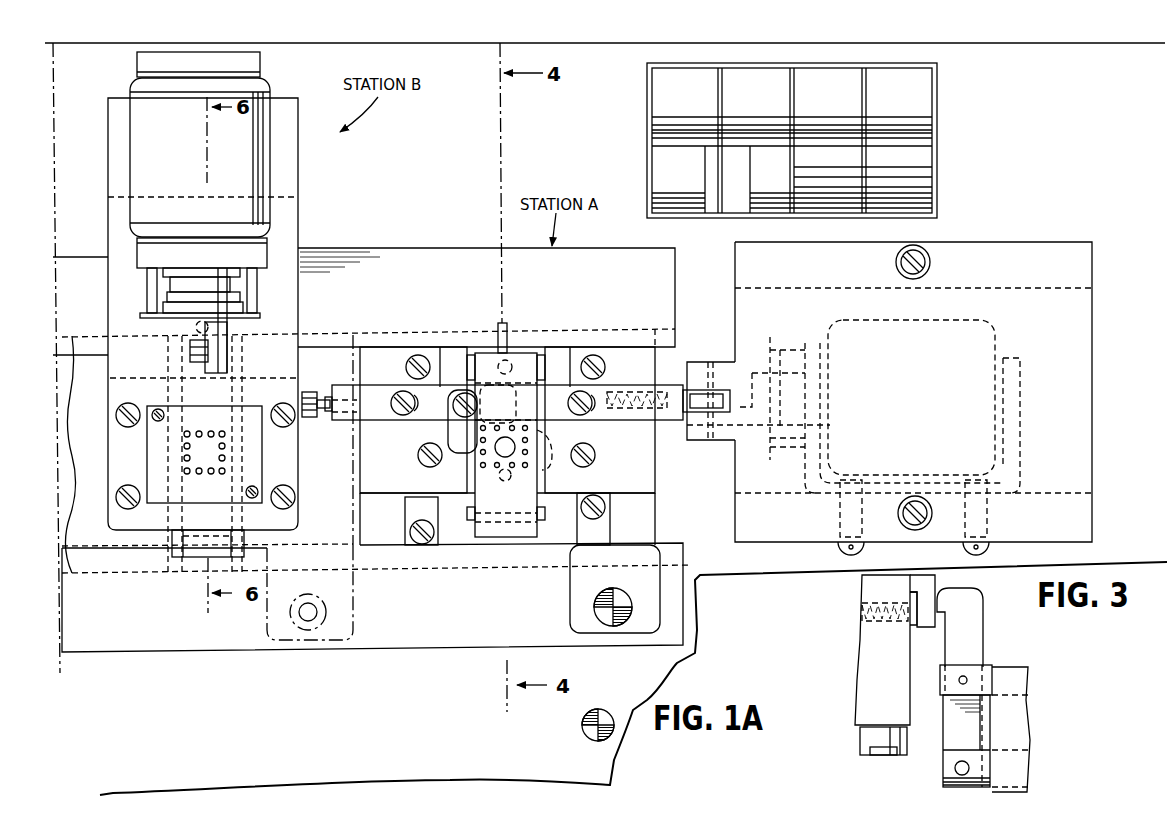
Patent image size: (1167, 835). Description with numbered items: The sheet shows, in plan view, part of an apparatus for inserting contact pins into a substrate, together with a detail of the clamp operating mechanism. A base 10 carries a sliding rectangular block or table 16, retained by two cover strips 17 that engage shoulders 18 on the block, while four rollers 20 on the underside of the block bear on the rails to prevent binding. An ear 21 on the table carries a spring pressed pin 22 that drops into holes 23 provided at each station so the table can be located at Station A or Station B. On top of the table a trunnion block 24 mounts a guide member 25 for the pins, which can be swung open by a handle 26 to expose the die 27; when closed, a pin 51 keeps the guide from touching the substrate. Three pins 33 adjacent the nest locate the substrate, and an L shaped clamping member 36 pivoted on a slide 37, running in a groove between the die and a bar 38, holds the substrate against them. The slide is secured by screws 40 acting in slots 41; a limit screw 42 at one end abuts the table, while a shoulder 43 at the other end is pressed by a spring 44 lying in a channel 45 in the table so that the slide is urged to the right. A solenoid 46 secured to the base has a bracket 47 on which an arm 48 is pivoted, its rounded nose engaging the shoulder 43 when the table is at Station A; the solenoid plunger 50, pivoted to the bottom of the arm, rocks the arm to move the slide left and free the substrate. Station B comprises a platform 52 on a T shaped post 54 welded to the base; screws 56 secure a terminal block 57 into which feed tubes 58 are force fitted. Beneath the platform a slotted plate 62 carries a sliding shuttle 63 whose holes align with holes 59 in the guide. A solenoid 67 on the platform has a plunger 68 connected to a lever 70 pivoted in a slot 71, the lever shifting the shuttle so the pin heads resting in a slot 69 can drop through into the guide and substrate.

In FIG. 1A, the base 10 is at (295, 713).
In FIG. 3, the block or table 16 is at (862, 683).
In FIG. 1A, the cover strips 17 is at (404, 252).
In FIG. 1A, the shoulders 18 is at (597, 332).
In FIG. 3, the rollers 20 is at (866, 738).
In FIG. 1A, the ear 21 is at (573, 602).
In FIG. 1A, the spring pressed pin 22 is at (608, 592).
In FIG. 1A, the holes 23 is at (309, 606).
In FIG. 1A, the trunnion block 24 is at (448, 552).
In FIG. 1A, the guide member 25 is at (486, 353).
In FIG. 1A, the handle 26 is at (506, 348).
In FIG. 1A, the die 27 is at (650, 457).
In FIG. 1A, the pins 33 is at (513, 475).
In FIG. 1A, the L shaped clamping member 36 is at (465, 454).
In FIG. 1A, the slide 37 is at (382, 394).
In FIG. 3, the slide 37 is at (923, 585).
In FIG. 1A, the bar 38 is at (375, 358).
In FIG. 1A, the screws 40 is at (398, 417).
In FIG. 1A, the slots 41 is at (383, 420).
In FIG. 1A, the limit screw 42 is at (306, 393).
In FIG. 1A, the shoulder 43 is at (670, 421).
In FIG. 3, the shoulder 43 is at (925, 627).
In FIG. 1A, the spring 44 is at (630, 392).
In FIG. 3, the spring 44 is at (890, 624).
In FIG. 3, the channel 45 is at (868, 603).
In FIG. 1A, the solenoid 46 is at (988, 335).
In FIG. 3, the solenoid 46 is at (1028, 680).
In FIG. 1A, the bracket 47 is at (726, 440).
In FIG. 3, the bracket 47 is at (964, 675).
In FIG. 1A, the arm 48 is at (696, 398).
In FIG. 3, the arm 48 is at (985, 612).
In FIG. 3, the plunger 50 is at (946, 766).
In FIG. 1A, the pin 51 is at (512, 362).
In FIG. 1A, the platform 52 is at (288, 236).
In FIG. 1A, the T shaped post 54 is at (285, 174).
In FIG. 1A, the screws 56 is at (152, 408).
In FIG. 1A, the terminal block 57 is at (250, 418).
In FIG. 1A, the tubes 58 is at (221, 432).
In FIG. 1A, the holes 59 is at (483, 468).
In FIG. 1A, the slotted plate 62 is at (288, 460).
In FIG. 1A, the shuttle 63 is at (240, 546).
In FIG. 1A, the solenoid 67 is at (170, 150).
In FIG. 1A, the plunger 68 is at (240, 345).
In FIG. 1A, the slot 69 is at (195, 550).
In FIG. 1A, the lever 70 is at (197, 337).
In FIG. 1A, the slot 71 is at (205, 330).